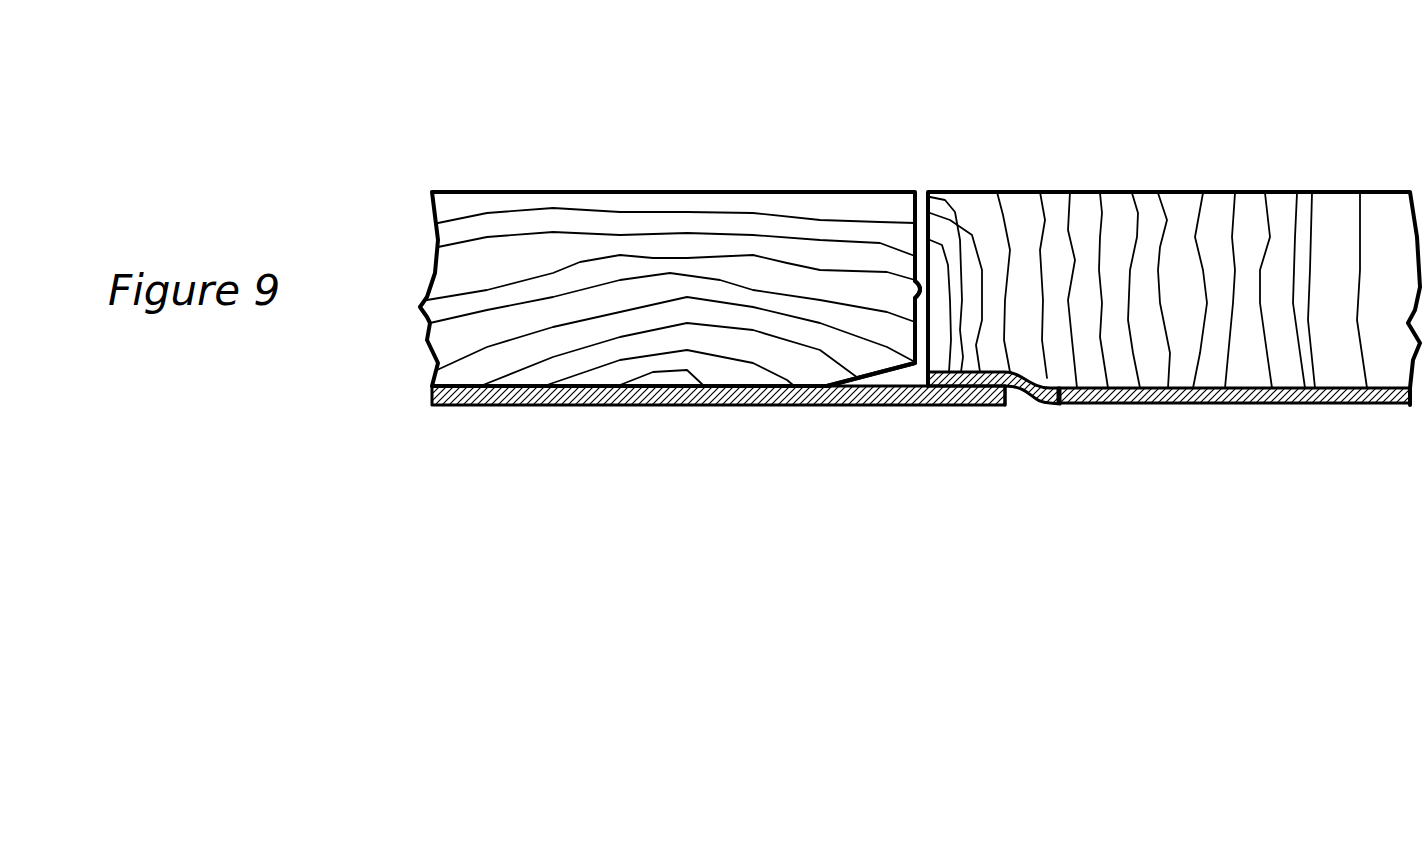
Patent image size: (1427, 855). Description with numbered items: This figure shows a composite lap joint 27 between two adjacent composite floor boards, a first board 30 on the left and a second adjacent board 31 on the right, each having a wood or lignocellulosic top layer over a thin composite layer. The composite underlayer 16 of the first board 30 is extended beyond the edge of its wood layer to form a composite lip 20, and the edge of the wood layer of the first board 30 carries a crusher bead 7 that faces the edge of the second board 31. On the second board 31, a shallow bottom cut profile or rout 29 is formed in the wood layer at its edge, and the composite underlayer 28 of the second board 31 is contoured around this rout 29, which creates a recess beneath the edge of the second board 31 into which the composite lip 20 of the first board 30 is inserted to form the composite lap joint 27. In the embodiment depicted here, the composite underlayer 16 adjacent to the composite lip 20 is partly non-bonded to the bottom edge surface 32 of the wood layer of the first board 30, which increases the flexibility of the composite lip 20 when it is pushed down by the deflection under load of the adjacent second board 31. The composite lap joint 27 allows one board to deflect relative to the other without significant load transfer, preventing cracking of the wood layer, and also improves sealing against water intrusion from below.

The first board 30 is at (680, 150).
The second adjacent board 31 is at (1165, 152).
The bottom edge surface 32 is at (845, 364).
The crusher bead 7 is at (901, 207).
The rout 29 is at (994, 260).
The composite underlayer 16 is at (648, 416).
The composite lip 20 is at (995, 419).
The composite underlayer 28 is at (1192, 416).
The composite lap joint 27 is at (923, 462).